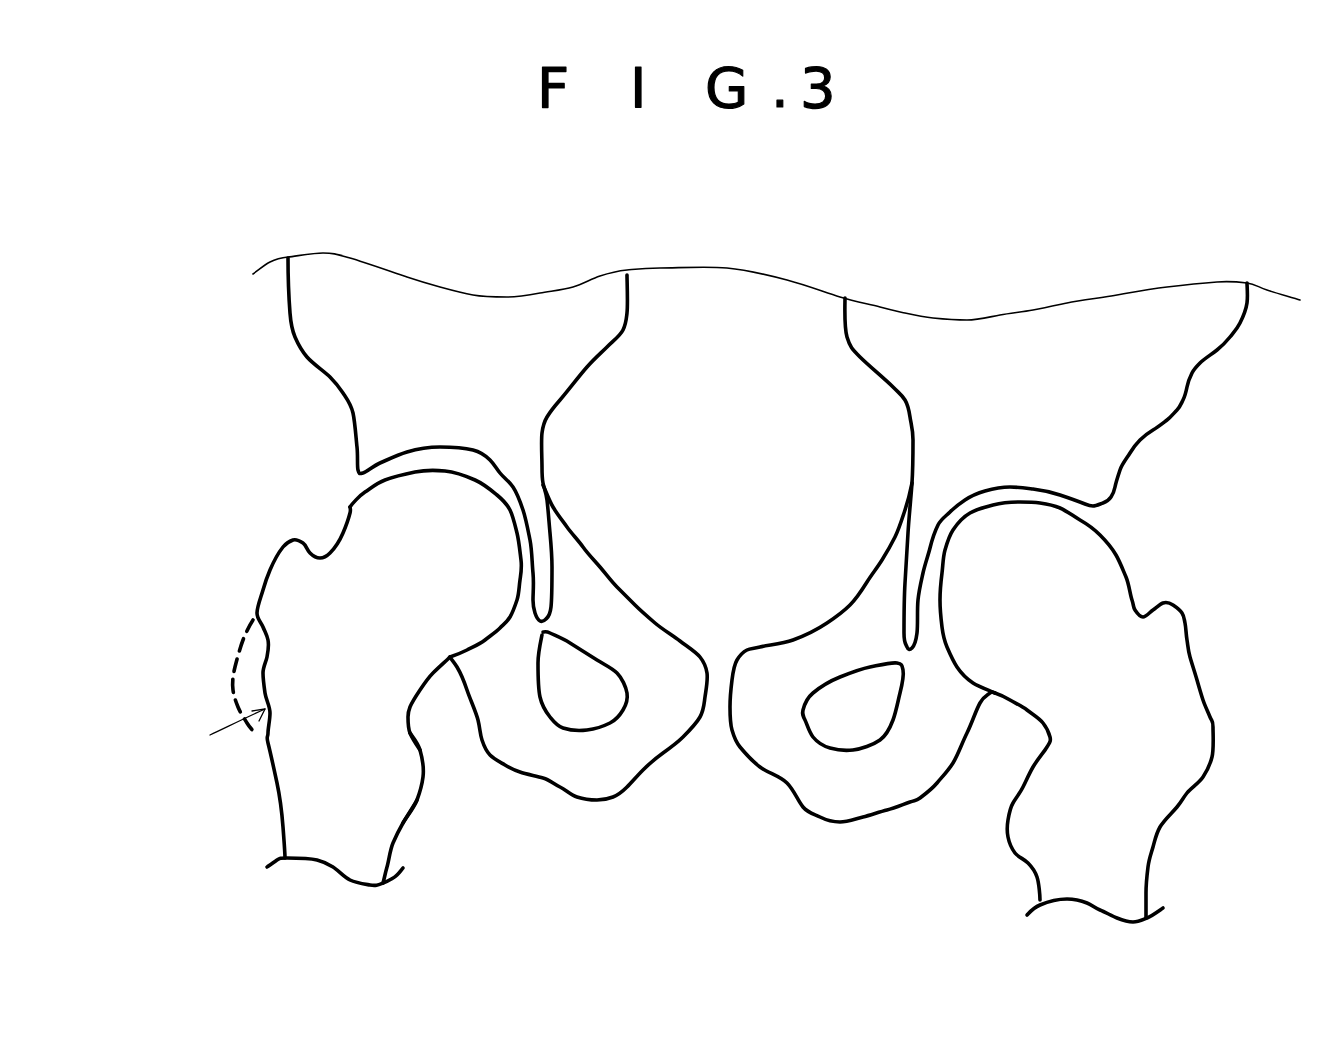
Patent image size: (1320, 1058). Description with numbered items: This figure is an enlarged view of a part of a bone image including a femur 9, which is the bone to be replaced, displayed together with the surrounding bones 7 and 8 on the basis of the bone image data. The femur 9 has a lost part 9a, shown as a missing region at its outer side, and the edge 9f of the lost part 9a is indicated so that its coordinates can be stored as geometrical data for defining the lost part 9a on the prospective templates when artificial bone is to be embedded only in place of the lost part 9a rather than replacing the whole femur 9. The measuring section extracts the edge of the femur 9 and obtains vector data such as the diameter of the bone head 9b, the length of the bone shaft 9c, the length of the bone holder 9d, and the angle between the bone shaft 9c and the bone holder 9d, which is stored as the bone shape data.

The bone 7 is at (937, 338).
The bone 8 is at (1160, 728).
The femur 9 is at (320, 770).
The lost part 9a is at (257, 657).
The bone head 9b is at (403, 507).
The bone shaft 9c is at (367, 843).
The bone holder 9d is at (403, 660).
The edge 9f is at (215, 727).